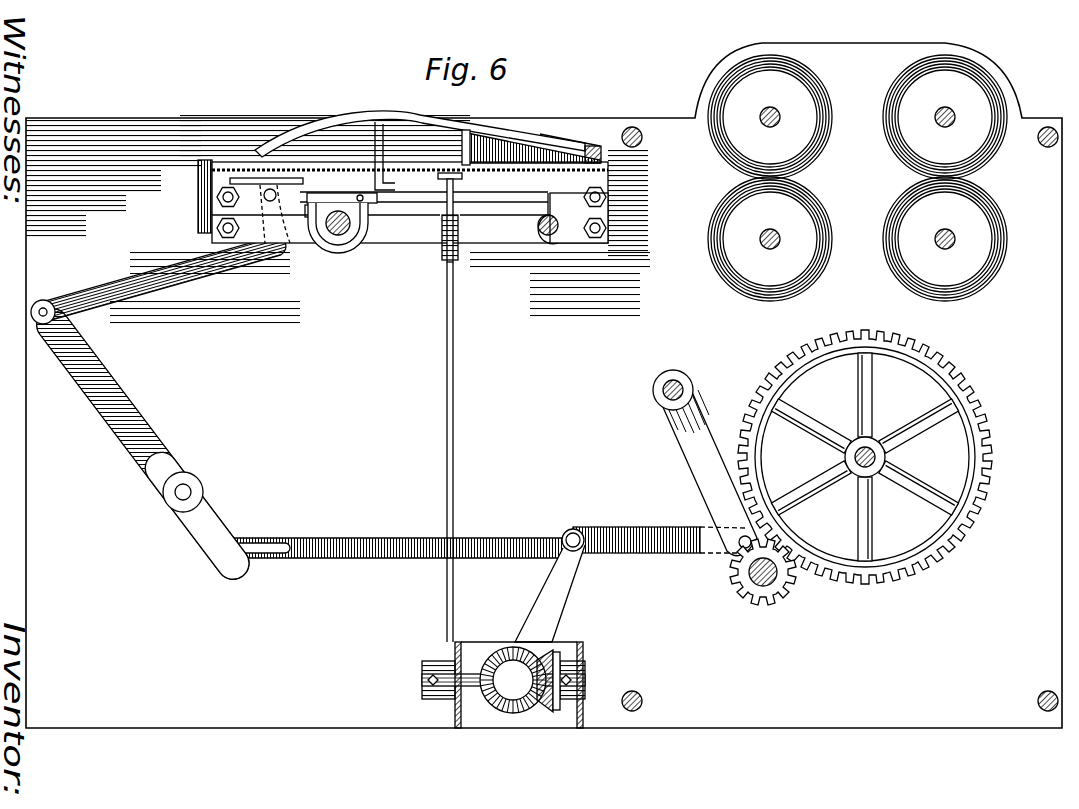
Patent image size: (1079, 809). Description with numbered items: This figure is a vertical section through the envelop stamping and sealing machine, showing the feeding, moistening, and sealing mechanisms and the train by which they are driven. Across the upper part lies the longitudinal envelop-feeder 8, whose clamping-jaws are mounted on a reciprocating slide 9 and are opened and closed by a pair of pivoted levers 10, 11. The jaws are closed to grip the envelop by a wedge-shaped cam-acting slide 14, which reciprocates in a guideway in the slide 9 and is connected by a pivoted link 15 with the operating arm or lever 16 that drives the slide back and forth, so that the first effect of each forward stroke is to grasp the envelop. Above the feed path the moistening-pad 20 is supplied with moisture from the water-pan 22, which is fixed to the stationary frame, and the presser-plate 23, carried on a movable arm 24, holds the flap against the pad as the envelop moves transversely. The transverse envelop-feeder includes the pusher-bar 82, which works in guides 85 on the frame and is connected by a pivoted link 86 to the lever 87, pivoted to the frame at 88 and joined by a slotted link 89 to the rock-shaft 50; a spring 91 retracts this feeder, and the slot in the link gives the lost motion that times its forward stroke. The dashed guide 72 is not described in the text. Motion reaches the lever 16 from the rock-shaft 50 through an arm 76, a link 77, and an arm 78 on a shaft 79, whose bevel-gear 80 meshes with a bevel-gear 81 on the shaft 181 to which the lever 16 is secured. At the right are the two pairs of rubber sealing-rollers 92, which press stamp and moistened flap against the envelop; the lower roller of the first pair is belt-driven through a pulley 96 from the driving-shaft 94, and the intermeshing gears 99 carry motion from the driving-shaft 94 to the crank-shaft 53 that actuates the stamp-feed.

The longitudinal envelop-feeder 8 is at (468, 140).
The reciprocating slide 9 is at (598, 198).
The pivoted lever 10 is at (382, 165).
The pivoted lever 11 is at (368, 240).
The wedge-shaped cam-acting slide 14 is at (452, 215).
The pivoted link 15 is at (458, 250).
The operating arm or lever 16 is at (454, 340).
The moistening-pad 20 is at (590, 148).
The water-pan 22 is at (520, 140).
The presser-plate 23 is at (560, 135).
The movable arm 24 is at (380, 128).
The rock-shaft 50 is at (685, 383).
The crank-shaft 53 is at (878, 457).
The dashed guide 72 is at (306, 216).
The arm 76 is at (700, 420).
The link 77 is at (622, 527).
The arm 78 is at (557, 600).
The shaft 79 is at (505, 660).
The bevel-gear 80 is at (506, 694).
The bevel-gear 81 is at (560, 665).
The shaft 181 is at (478, 681).
The pusher-bar 82 is at (248, 180).
The guides 85 is at (592, 220).
The pivoted link 86 is at (108, 290).
The lever 87 is at (108, 372).
The pivot 88 is at (195, 485).
The slotted link 89 is at (360, 540).
The spring 91 is at (192, 492).
The sealing-rollers 92 is at (805, 80).
The driving-shaft 94 is at (758, 588).
The pulley 96 is at (713, 525).
The intermeshing gears 99 is at (890, 568).